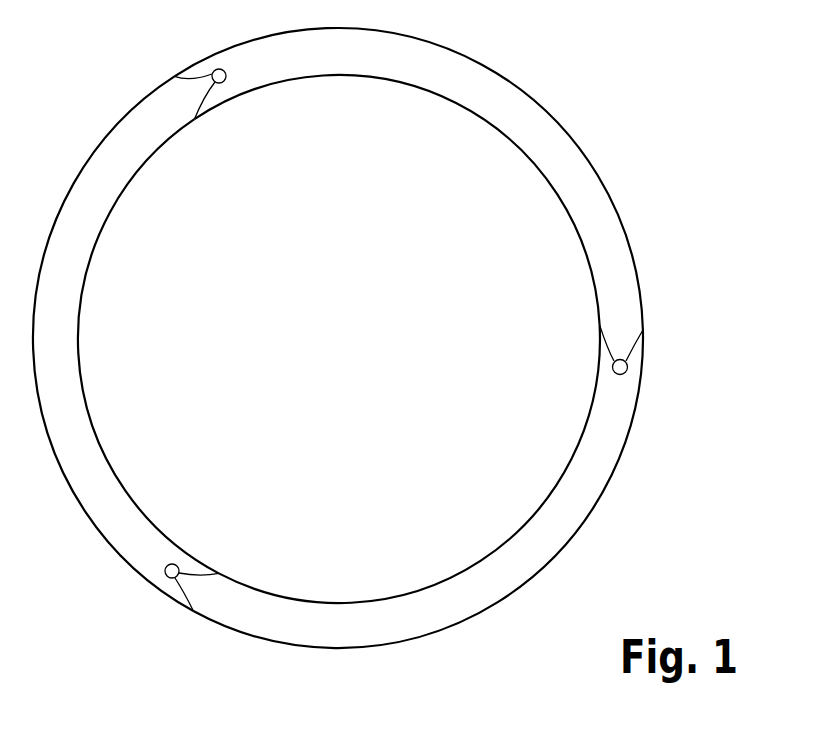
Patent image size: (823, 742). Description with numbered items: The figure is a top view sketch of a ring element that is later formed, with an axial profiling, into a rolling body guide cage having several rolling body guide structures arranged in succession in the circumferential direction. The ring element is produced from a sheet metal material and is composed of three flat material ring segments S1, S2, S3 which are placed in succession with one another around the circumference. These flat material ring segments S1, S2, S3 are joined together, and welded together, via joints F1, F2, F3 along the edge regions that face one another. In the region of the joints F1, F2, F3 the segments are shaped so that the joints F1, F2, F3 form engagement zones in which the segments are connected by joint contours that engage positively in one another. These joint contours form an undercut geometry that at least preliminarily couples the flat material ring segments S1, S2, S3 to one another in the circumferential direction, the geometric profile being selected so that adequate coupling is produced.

The flat material ring segment S1 is at (535, 120).
The flat material ring segment S2 is at (577, 515).
The flat material ring segment S3 is at (68, 455).
The joint F1 is at (573, 346).
The joint F2 is at (231, 562).
The joint F3 is at (219, 128).